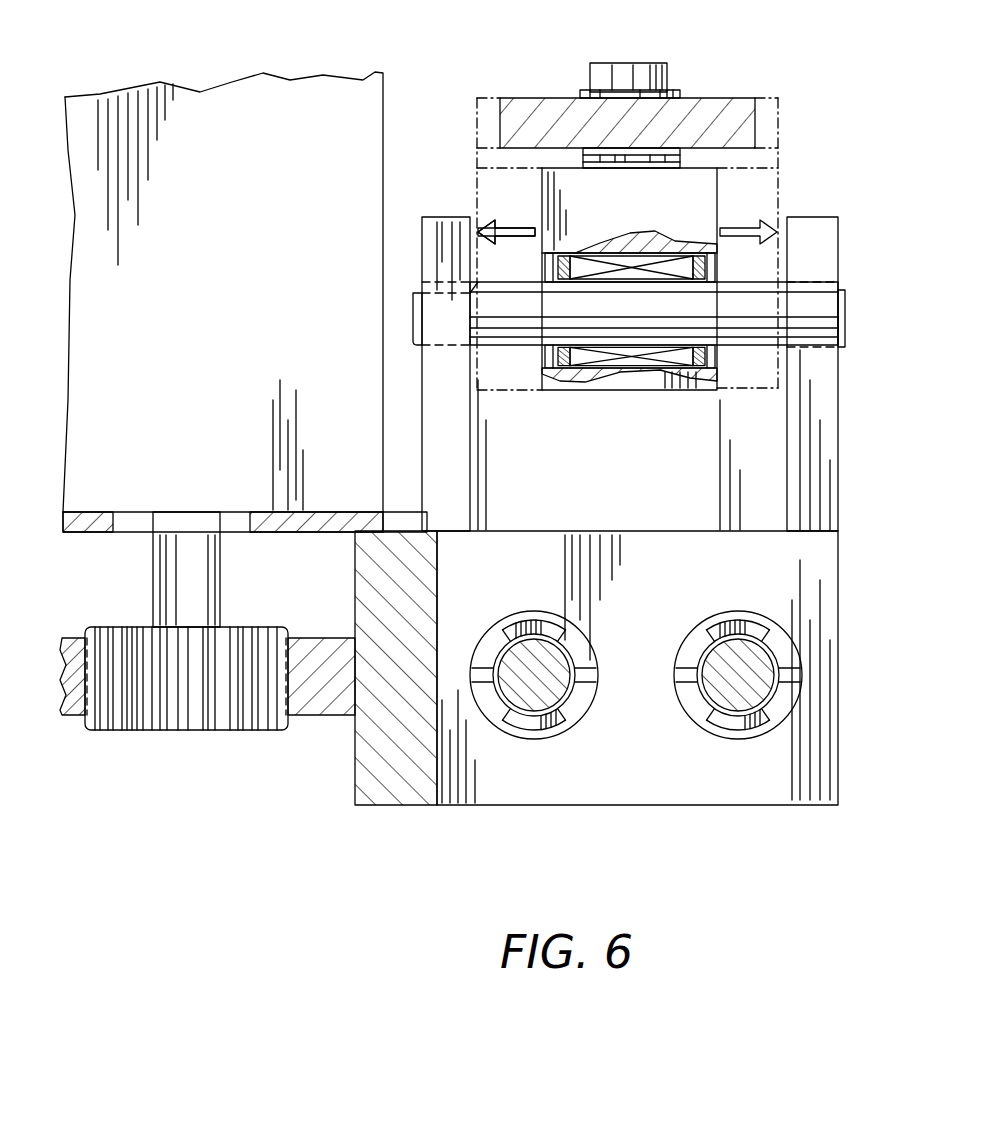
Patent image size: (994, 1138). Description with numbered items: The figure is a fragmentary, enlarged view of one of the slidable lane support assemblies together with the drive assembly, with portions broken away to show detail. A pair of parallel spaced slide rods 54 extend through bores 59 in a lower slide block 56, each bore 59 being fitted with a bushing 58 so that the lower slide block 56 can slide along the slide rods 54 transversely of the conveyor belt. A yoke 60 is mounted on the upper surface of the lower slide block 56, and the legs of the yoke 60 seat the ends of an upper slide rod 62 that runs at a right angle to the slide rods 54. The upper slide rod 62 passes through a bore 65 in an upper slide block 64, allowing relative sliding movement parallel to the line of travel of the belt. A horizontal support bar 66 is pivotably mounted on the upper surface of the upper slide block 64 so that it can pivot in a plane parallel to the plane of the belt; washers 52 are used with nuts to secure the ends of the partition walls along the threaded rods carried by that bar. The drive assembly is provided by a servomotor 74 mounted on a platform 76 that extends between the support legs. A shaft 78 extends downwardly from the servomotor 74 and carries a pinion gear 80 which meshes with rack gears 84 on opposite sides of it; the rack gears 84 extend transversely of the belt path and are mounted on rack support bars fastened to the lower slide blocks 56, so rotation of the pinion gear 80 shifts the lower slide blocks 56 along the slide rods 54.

The washer 52 is at (415, 768).
The slide rod 54 is at (765, 683).
The lower slide block 56 is at (820, 580).
The bushing 58 is at (790, 646).
The bore 59 is at (745, 714).
The yoke 60 is at (830, 228).
The upper slide rod 62 is at (758, 323).
The upper slide block 64 is at (710, 203).
The bore 65 is at (752, 298).
The horizontal support bar 66 is at (728, 98).
The servomotor 74 is at (252, 104).
The platform 76 is at (100, 524).
The shaft 78 is at (206, 572).
The pinion gear 80 is at (185, 704).
The rack gear 84 is at (316, 704).